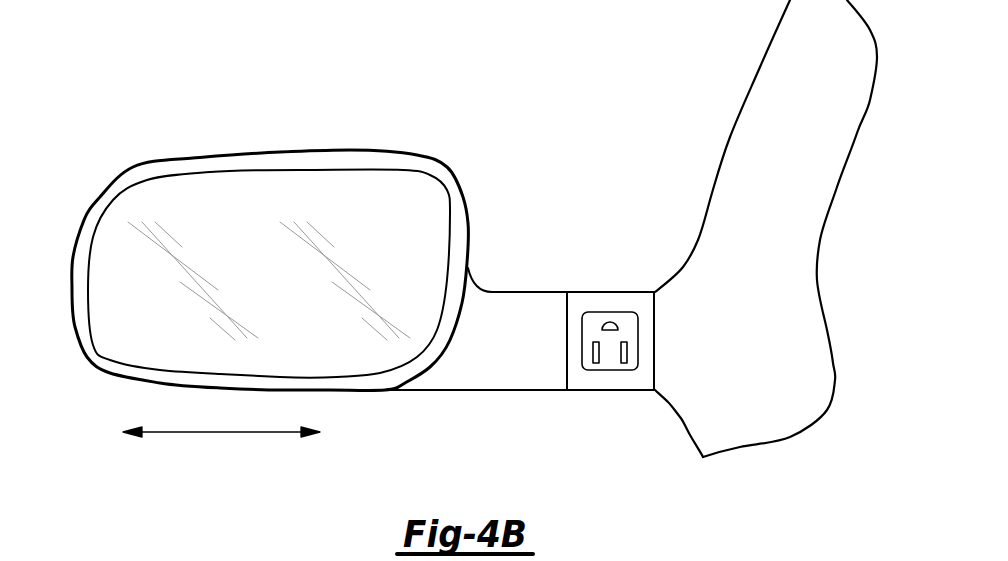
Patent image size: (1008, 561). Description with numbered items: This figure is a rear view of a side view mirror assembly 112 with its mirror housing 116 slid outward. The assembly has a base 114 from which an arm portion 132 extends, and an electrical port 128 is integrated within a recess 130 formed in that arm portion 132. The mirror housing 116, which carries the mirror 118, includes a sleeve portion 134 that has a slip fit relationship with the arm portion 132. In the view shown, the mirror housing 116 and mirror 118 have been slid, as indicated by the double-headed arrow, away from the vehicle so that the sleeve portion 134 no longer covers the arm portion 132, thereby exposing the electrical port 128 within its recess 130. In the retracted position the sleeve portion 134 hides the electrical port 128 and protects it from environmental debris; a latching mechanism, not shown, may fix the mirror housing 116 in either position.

The side view mirror assembly 112 is at (363, 249).
The base 114 is at (730, 137).
The mirror housing 116 is at (247, 153).
The mirror 118 is at (412, 168).
The electrical port 128 is at (611, 336).
The recess 130 is at (610, 333).
The arm portion 132 is at (583, 380).
The sleeve portion 134 is at (510, 305).